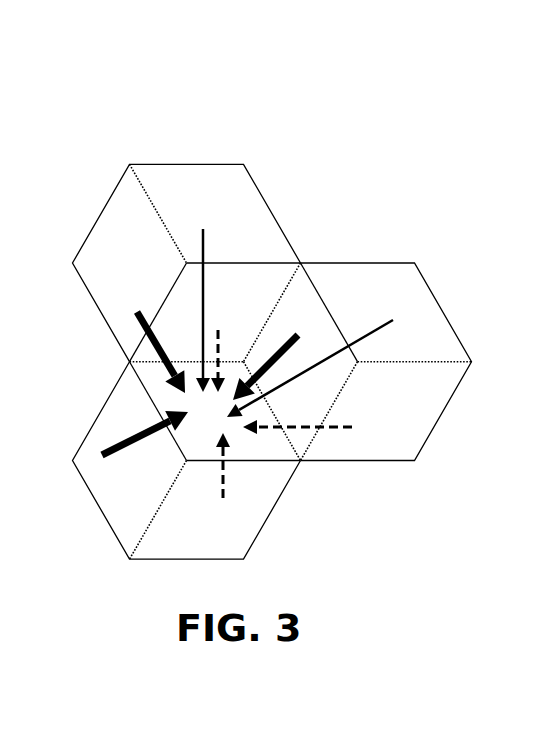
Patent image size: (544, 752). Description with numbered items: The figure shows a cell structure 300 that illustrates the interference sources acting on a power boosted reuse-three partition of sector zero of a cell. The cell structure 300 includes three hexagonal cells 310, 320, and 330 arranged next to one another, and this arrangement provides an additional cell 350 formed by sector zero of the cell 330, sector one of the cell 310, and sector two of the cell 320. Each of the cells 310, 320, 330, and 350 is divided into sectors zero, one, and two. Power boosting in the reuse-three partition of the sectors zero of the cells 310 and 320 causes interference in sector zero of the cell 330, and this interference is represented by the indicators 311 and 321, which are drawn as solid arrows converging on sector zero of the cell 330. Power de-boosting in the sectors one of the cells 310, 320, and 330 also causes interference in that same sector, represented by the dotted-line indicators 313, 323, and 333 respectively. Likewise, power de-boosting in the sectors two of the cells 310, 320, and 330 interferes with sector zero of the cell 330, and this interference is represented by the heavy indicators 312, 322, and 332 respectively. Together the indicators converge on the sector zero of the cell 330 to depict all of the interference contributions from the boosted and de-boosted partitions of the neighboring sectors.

The cell structure 300 is at (150, 77).
The cell 310 is at (168, 165).
The indicator 311 is at (202, 247).
The indicator 312 is at (135, 313).
The indicator (dotted line) 313 is at (218, 332).
The cell 320 is at (449, 397).
The indicator 321 is at (382, 318).
The indicator 322 is at (295, 333).
The indicator (dotted line) 323 is at (335, 432).
The cell 330 is at (98, 507).
The indicator 332 is at (120, 438).
The indicator (dotted line) 333 is at (225, 475).
The additional cell 350 is at (268, 262).